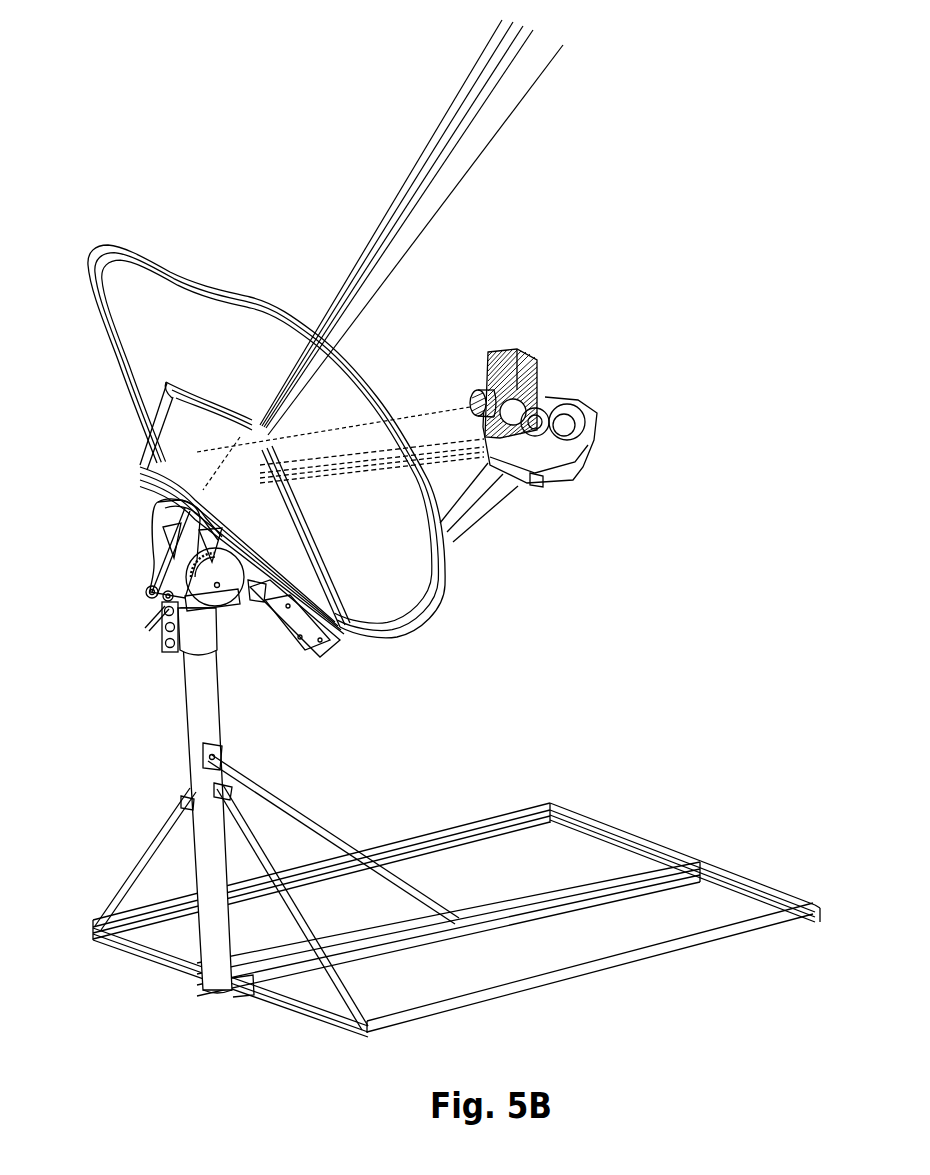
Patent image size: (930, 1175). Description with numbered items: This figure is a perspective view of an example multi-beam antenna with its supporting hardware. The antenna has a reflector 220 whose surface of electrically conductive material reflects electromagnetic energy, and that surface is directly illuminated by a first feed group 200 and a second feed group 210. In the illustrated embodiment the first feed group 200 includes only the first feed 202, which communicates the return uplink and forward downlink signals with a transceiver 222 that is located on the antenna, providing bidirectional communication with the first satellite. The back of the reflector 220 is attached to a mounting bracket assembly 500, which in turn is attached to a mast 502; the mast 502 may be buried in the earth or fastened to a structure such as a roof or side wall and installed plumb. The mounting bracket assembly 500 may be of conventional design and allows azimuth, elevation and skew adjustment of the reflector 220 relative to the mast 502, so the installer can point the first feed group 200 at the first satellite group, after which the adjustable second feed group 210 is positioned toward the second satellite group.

The reflector 220 is at (140, 288).
The first feed group 200 is at (478, 383).
The first feed 202 is at (486, 379).
The transceiver 222 is at (519, 368).
The second feed group 210 is at (560, 442).
The mounting bracket assembly 500 is at (136, 543).
The mast 502 is at (203, 716).